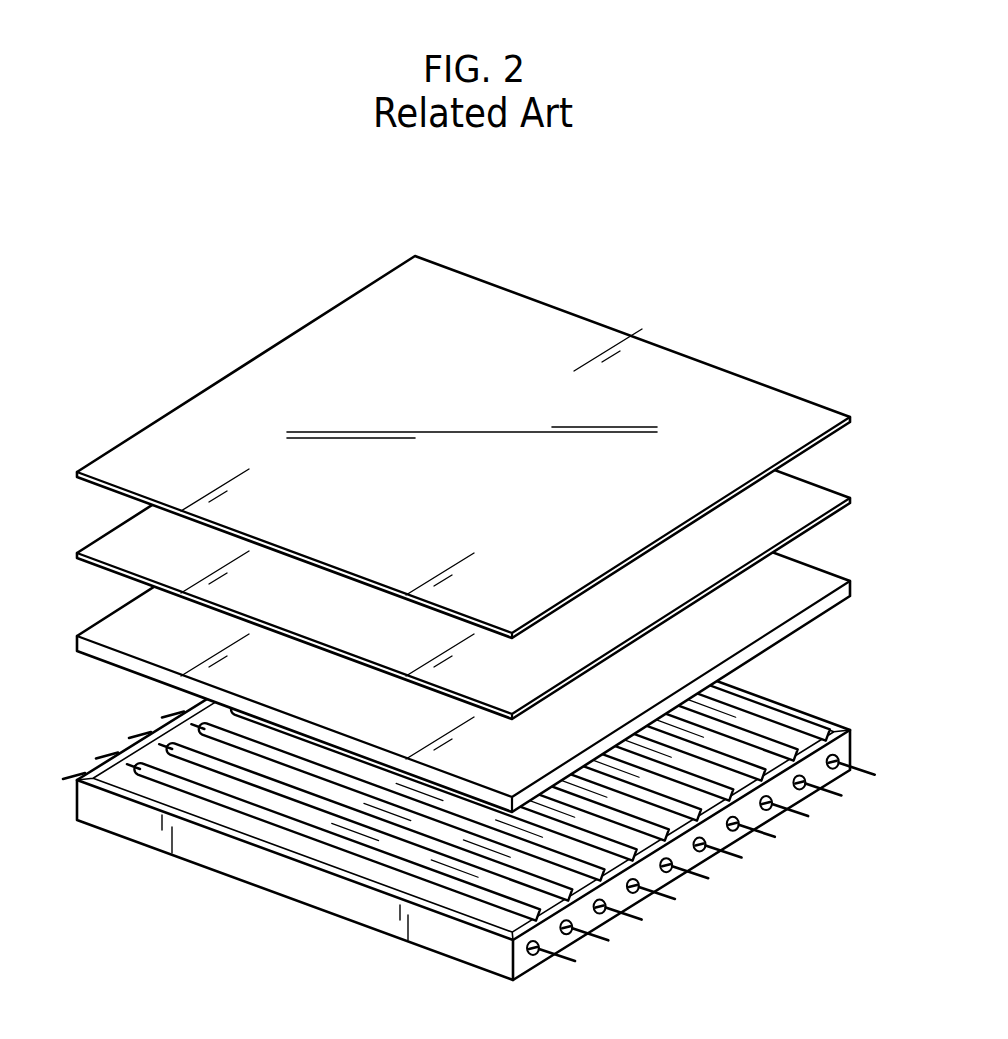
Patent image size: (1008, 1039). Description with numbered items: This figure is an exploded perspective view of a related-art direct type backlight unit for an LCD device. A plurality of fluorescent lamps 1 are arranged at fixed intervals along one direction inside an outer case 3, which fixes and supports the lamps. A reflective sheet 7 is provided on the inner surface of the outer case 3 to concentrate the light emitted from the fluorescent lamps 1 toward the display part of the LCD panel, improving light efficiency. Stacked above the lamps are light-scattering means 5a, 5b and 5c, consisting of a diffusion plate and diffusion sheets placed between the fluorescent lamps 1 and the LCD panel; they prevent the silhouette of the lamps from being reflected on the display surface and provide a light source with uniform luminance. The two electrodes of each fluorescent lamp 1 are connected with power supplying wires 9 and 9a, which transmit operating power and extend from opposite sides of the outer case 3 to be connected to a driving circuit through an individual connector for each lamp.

The fluorescent lamp 1 is at (306, 831).
The outer case 3 is at (490, 955).
The light-scattering means 5a is at (801, 573).
The light-scattering means 5b is at (803, 490).
The light-scattering means 5c is at (803, 408).
The reflective sheet 7 is at (428, 858).
The power supplying wire 9 is at (563, 962).
The power supplying wire 9a is at (70, 776).